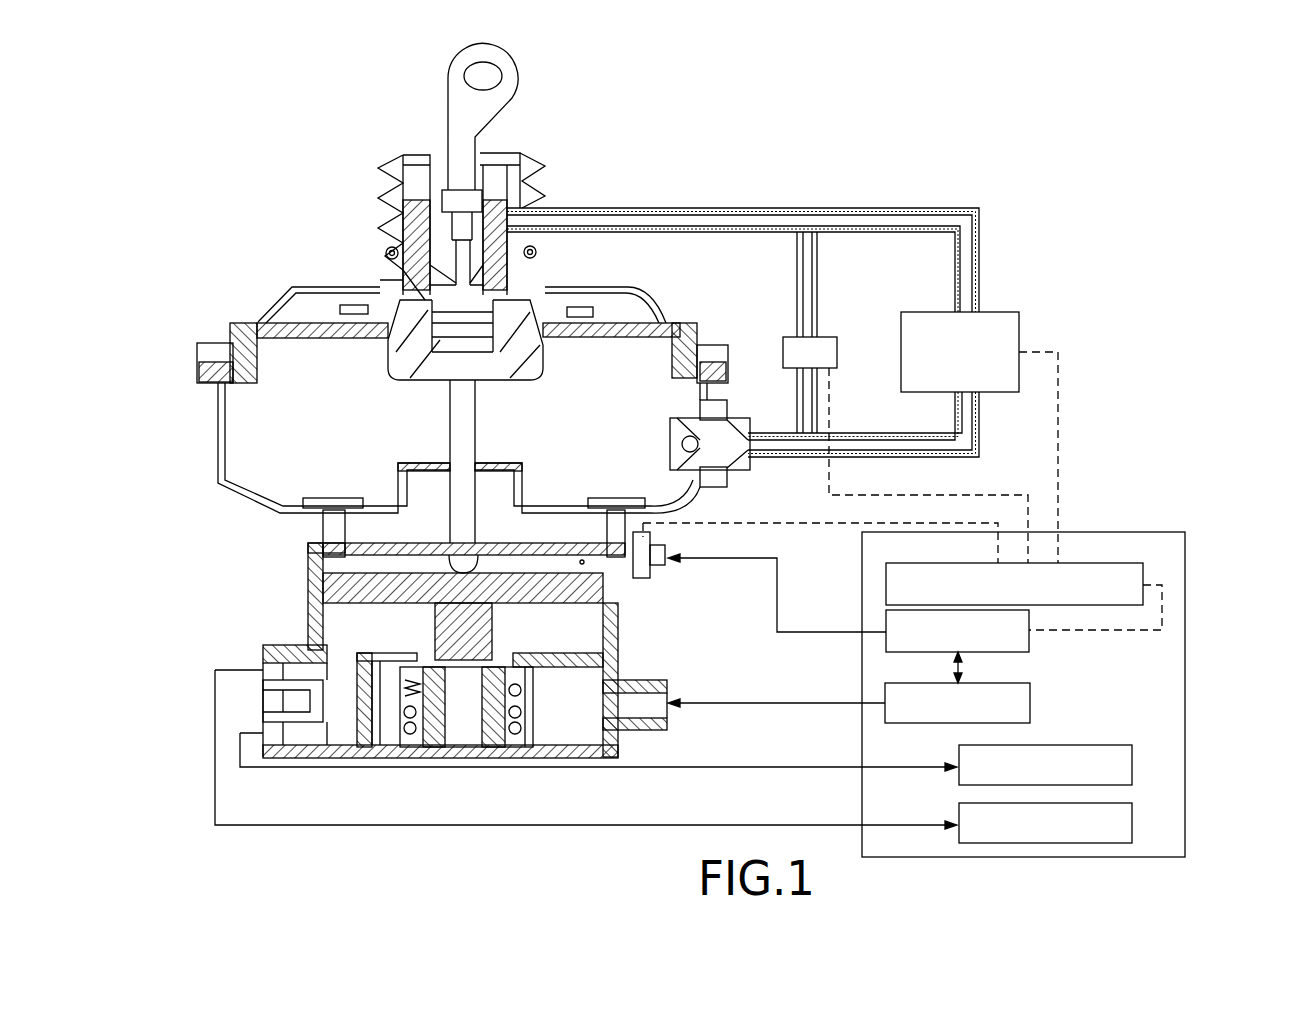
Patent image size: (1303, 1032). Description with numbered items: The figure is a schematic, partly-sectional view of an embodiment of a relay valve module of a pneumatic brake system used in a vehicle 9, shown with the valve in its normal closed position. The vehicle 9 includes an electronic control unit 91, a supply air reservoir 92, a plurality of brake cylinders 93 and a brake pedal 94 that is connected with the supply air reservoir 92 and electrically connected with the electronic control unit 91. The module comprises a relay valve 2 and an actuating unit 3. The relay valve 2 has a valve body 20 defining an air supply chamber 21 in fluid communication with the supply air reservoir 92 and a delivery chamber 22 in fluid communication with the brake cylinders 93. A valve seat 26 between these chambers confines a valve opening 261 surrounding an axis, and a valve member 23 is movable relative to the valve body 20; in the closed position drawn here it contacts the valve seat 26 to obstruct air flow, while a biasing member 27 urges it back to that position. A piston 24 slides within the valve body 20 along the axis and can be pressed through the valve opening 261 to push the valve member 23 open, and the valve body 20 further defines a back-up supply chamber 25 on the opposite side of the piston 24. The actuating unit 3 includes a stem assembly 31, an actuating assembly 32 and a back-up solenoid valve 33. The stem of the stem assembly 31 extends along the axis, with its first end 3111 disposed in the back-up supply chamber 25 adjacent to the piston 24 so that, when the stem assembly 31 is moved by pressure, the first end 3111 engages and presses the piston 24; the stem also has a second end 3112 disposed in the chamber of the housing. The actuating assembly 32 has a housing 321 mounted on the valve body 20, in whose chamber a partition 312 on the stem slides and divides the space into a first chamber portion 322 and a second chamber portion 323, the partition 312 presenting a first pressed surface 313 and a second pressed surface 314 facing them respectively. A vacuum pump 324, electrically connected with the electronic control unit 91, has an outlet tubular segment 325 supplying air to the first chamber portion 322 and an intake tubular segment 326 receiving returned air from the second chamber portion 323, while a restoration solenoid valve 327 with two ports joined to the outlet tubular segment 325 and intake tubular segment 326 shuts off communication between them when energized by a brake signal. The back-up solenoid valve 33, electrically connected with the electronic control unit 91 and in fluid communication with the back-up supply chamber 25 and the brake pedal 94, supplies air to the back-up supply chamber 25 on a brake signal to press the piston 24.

The relay valve 2 is at (448, 676).
The valve body 20 is at (307, 553).
The air supply chamber 21 is at (582, 682).
The delivery chamber 22 is at (333, 665).
The valve member 23 is at (527, 680).
The piston 24 is at (568, 600).
The back-up supply chamber 25 is at (580, 560).
The valve seat 26 is at (383, 666).
The valve opening 261 is at (433, 662).
The biasing member 27 is at (520, 728).
The actuating unit 3 is at (252, 274).
The stem assembly 31 is at (450, 410).
The first end 3111 is at (457, 524).
The seal 3112 is at (537, 249).
The partition 312 is at (390, 250).
The first pressed surface 313 is at (453, 272).
The second pressed surface 314 is at (412, 297).
The actuating assembly 32 is at (824, 341).
The housing 321 is at (700, 508).
The first chamber portion 322 is at (513, 182).
The second chamber portion 323 is at (645, 360).
The vacuum pump 324 is at (992, 330).
The outlet tubular segment 325 is at (962, 220).
The intake tubular segment 326 is at (967, 438).
The restoration solenoid valve 327 is at (825, 340).
The back-up solenoid valve 33 is at (653, 557).
The vehicle 9 is at (726, 643).
The electronic control unit 91 is at (1145, 570).
The supply air reservoir 92 is at (1033, 703).
The brake cylinder 93 is at (1133, 766).
The brake pedal 94 is at (880, 645).